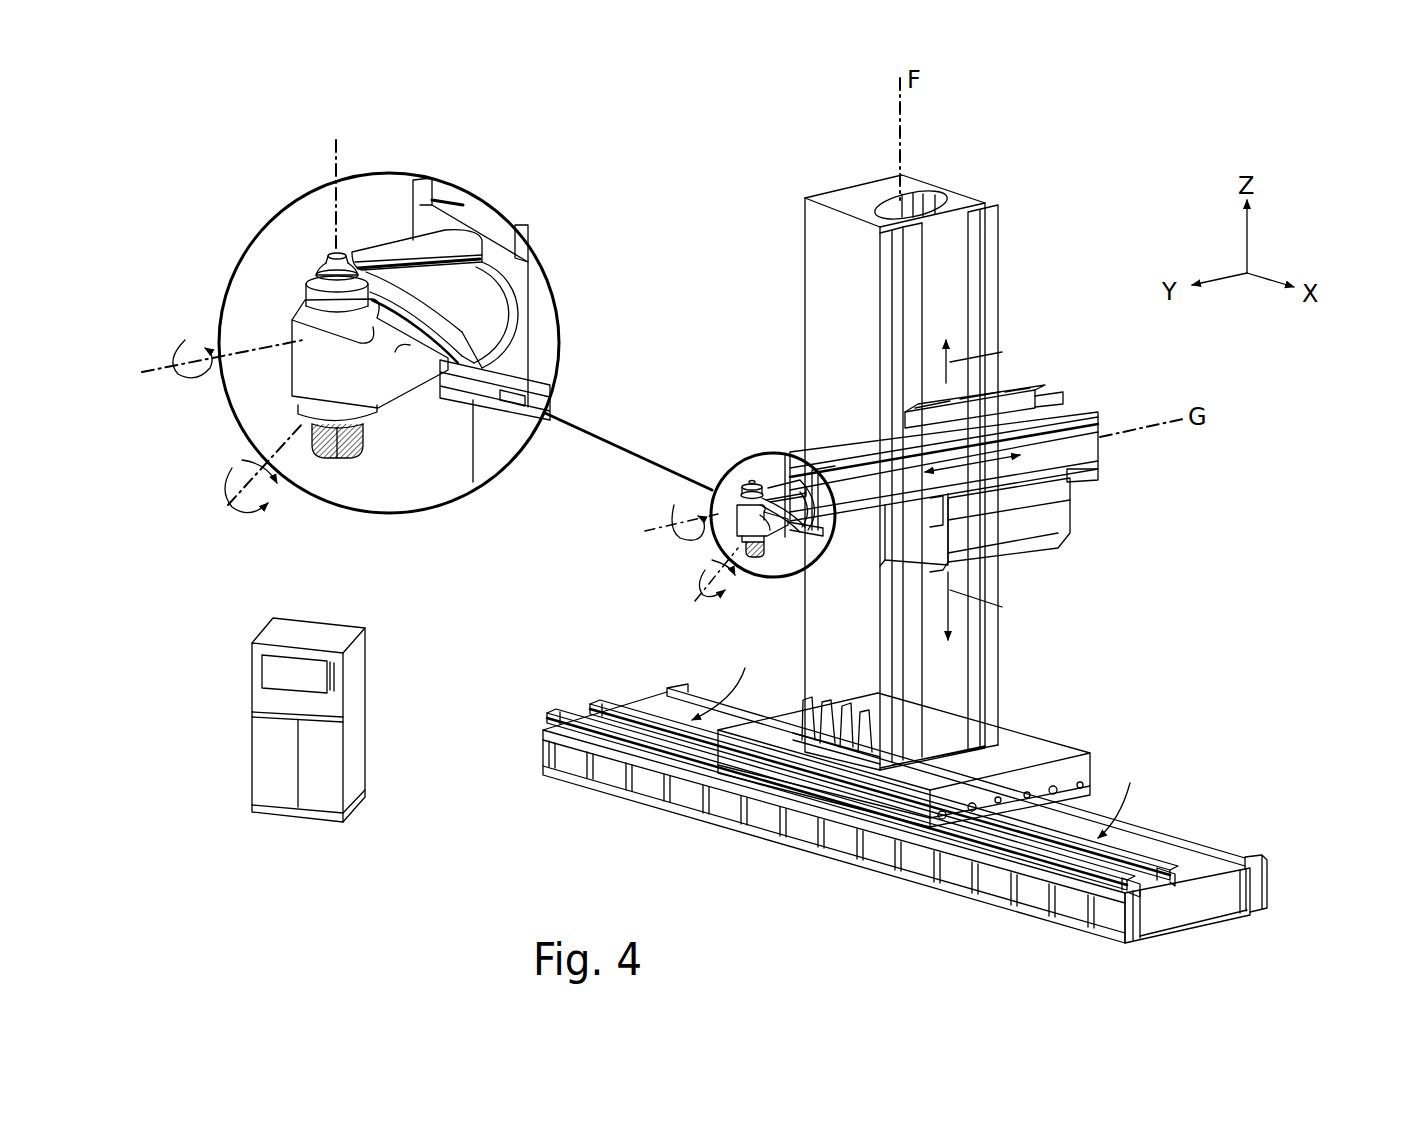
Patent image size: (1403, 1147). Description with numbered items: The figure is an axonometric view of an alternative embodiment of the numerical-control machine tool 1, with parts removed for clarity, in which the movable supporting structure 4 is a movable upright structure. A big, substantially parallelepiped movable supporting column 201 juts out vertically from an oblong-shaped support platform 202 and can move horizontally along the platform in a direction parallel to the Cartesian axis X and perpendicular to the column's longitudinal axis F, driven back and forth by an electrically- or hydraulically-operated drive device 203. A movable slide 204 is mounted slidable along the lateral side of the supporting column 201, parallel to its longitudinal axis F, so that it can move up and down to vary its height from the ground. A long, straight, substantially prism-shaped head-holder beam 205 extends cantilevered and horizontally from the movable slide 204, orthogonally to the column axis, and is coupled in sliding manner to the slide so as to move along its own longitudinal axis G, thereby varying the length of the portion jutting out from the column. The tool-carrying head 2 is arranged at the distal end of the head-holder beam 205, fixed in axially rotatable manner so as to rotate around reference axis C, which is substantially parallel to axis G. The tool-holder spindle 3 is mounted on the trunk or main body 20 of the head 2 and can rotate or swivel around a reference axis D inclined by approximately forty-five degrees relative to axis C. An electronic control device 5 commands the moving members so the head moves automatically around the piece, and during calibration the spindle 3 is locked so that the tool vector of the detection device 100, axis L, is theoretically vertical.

The machine tool 1 is at (1242, 696).
The tool-carrying head 2 is at (745, 480).
The tool-holder spindle 3 is at (307, 383).
The movable supporting structure 4 is at (793, 302).
The electronic control device 5 is at (262, 755).
The trunk or main body 20 is at (470, 298).
The detection device 100 is at (323, 458).
The movable supporting column 201 is at (835, 358).
The support platform 202 is at (806, 834).
The drive device 203 is at (992, 829).
The movable slide 204 is at (1056, 499).
The head-holder beam 205 is at (840, 455).